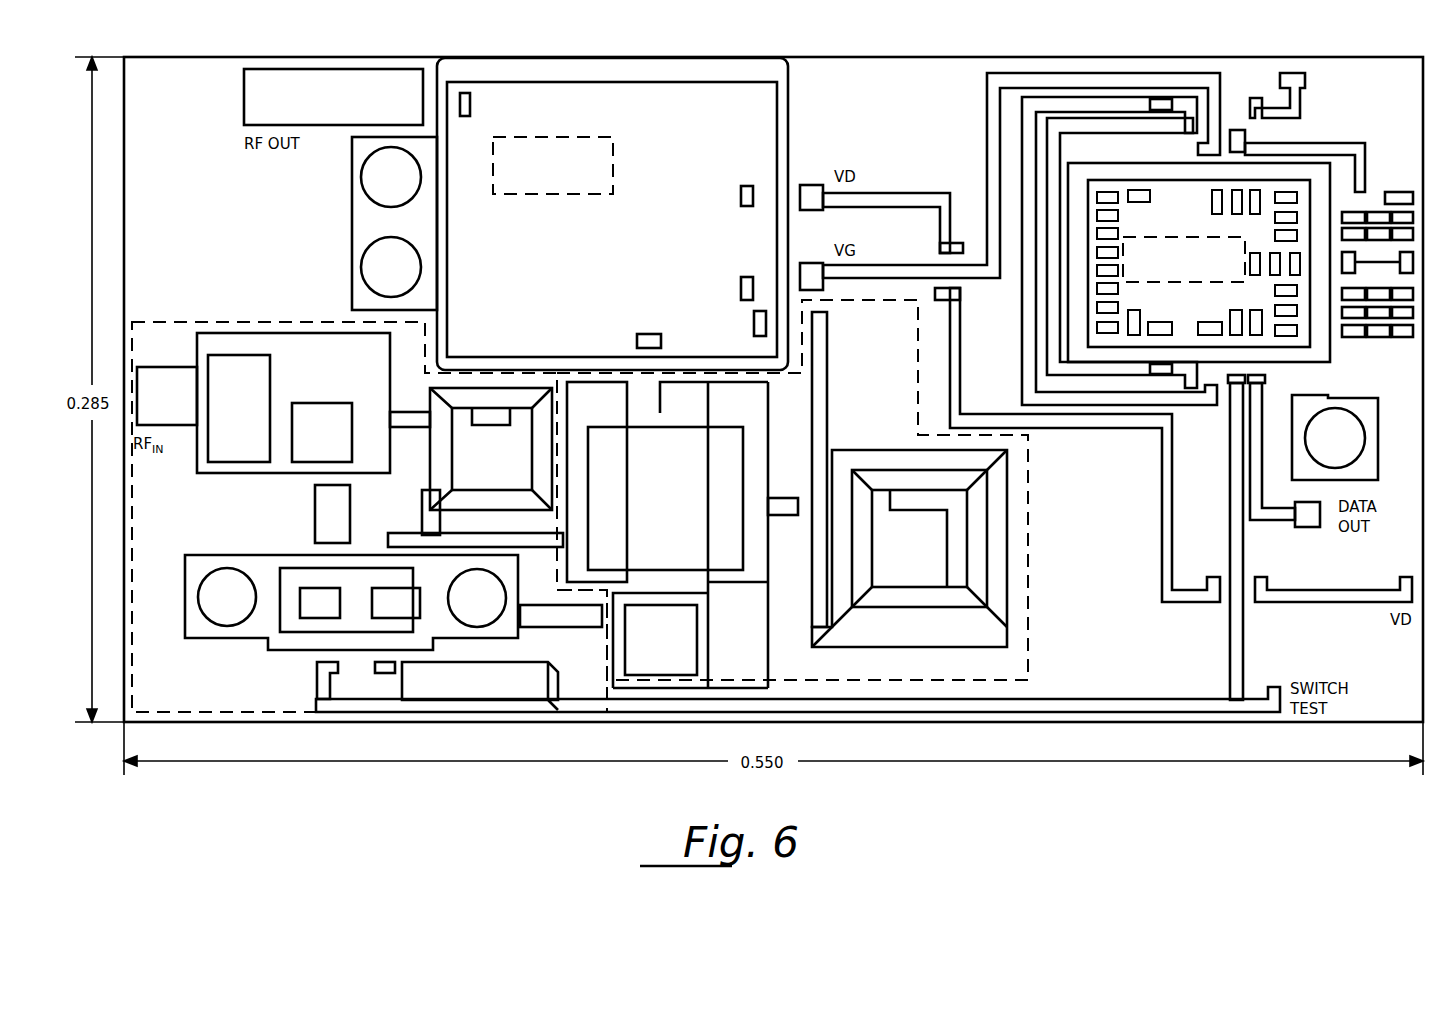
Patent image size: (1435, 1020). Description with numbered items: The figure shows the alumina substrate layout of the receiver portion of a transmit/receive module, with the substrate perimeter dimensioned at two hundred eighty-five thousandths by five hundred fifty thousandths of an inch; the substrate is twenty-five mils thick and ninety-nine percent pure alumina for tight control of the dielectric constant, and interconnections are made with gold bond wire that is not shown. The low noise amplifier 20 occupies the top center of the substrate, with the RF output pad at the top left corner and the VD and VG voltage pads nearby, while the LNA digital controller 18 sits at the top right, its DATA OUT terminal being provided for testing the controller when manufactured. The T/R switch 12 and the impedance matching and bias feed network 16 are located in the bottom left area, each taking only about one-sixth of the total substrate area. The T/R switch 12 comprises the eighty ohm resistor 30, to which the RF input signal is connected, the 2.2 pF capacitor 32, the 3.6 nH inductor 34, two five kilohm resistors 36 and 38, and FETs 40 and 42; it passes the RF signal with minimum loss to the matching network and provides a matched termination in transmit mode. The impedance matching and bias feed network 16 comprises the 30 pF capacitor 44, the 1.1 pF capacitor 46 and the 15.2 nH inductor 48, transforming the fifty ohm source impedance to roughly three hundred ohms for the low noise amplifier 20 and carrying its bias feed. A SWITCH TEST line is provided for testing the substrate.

The T/R switch 12 is at (198, 322).
The impedance matching and bias feed network 16 is at (1030, 505).
The LNA digital controller 18 is at (1152, 236).
The low noise amplifier 20 is at (524, 137).
The 80 ohm resistor 30 is at (271, 368).
The 2.2 pF capacitor 32 is at (305, 404).
The 3.6 nH inductor 34 is at (436, 396).
The 5K ohm resistor 36 is at (317, 694).
The 5K ohm resistor 38 is at (560, 681).
The FET 40 is at (337, 602).
The FET 42 is at (420, 600).
The 30 pF capacitor 44 is at (644, 428).
The 1.1 pF capacitor 46 is at (632, 662).
The 15.2 nH inductor 48 is at (858, 450).